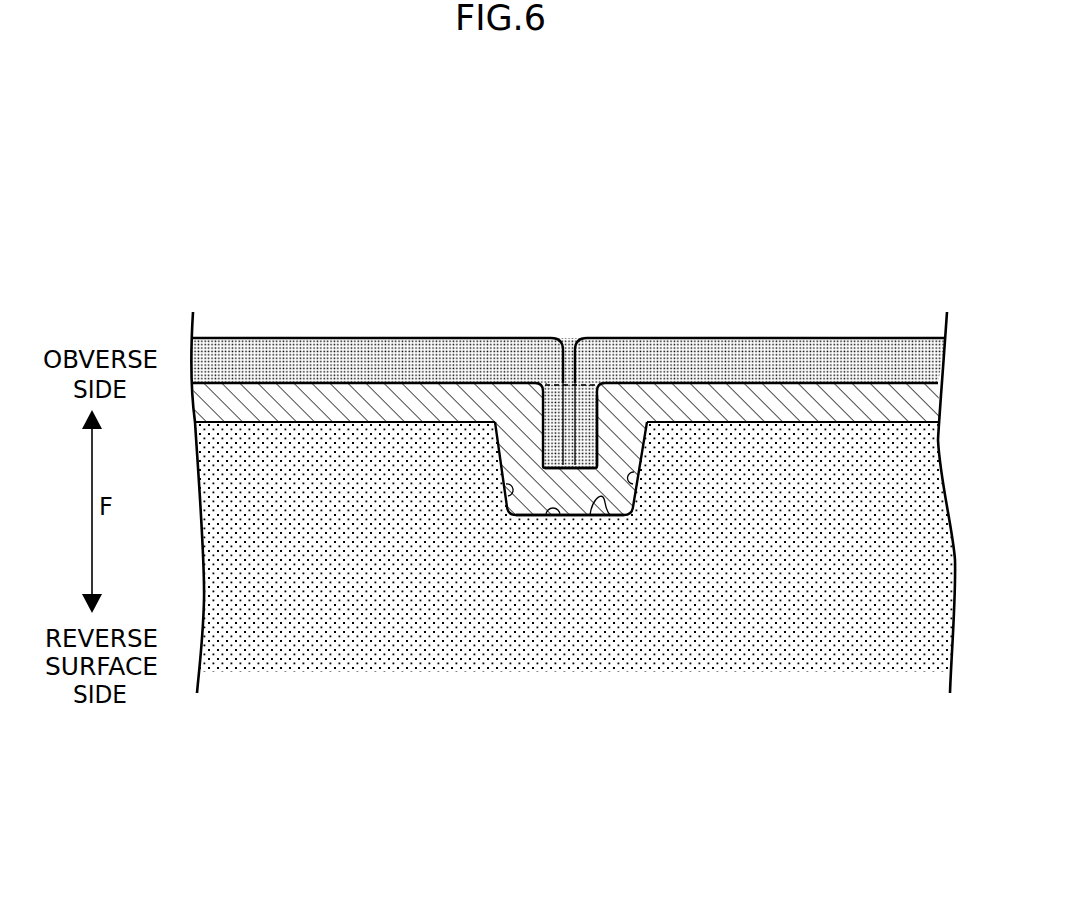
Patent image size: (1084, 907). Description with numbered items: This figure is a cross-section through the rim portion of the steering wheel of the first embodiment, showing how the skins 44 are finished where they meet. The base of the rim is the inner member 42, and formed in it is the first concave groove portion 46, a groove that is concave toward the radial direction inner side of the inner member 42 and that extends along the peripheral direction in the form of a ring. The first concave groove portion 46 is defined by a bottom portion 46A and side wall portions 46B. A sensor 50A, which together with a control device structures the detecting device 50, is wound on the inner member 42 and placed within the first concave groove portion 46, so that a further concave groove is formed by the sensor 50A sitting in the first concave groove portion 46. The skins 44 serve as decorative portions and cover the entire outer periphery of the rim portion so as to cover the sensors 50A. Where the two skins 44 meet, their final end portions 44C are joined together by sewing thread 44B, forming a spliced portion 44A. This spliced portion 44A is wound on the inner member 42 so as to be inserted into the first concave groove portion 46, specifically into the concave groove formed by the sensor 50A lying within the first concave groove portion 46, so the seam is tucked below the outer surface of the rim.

The inner member 42 is at (787, 622).
The skins 44 is at (405, 358).
The spliced portion 44A is at (603, 423).
The sewing thread 44B is at (557, 385).
The final end portions 44C is at (580, 403).
The first concave groove portion 46 is at (622, 517).
The bottom portion 46A is at (560, 518).
The side wall portions 46B is at (505, 492).
The detecting device 50 is at (699, 122).
The sensors 50A is at (853, 392).